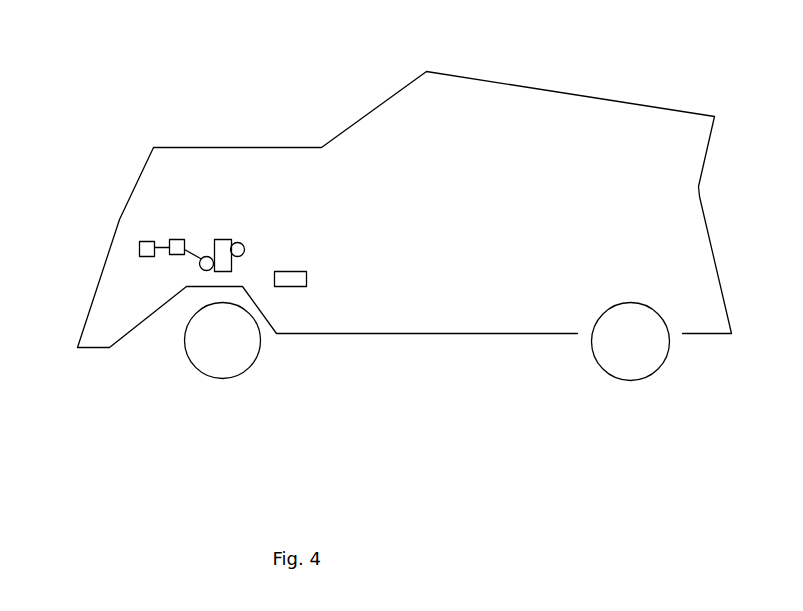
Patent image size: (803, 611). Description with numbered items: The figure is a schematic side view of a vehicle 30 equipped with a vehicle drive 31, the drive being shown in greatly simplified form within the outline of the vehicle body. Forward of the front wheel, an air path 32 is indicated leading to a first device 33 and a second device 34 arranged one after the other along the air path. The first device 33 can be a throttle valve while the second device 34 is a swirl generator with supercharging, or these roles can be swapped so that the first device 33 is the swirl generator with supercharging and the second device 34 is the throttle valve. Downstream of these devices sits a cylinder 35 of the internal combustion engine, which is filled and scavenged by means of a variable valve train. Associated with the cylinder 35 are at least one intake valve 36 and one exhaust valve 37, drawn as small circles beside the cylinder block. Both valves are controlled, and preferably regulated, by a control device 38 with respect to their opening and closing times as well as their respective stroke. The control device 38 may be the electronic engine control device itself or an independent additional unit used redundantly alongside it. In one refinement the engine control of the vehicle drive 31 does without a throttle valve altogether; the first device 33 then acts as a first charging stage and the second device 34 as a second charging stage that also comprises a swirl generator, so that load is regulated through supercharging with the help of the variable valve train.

The vehicle 30 is at (458, 334).
The vehicle drive 31 is at (148, 158).
The air path 32 is at (140, 247).
The first device 33 is at (178, 256).
The second device 34 is at (170, 243).
The cylinder 35 is at (240, 244).
The intake valve 36 is at (202, 270).
The exhaust valve 37 is at (251, 263).
The control device 38 is at (293, 287).